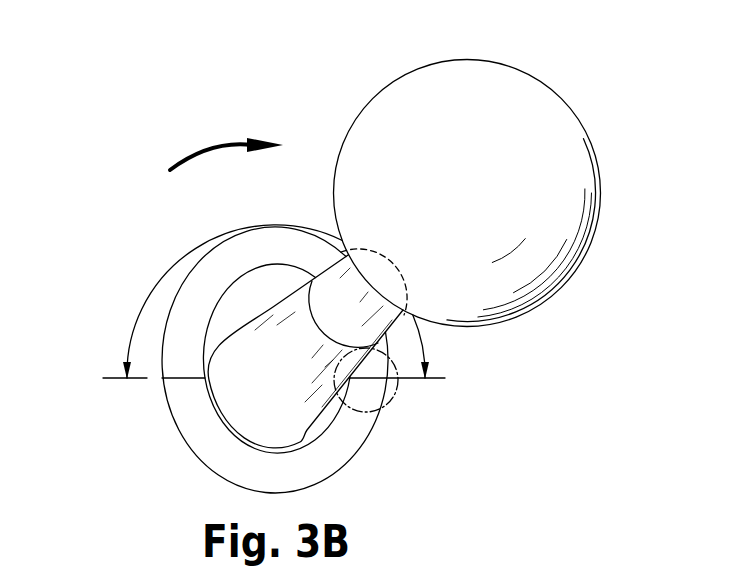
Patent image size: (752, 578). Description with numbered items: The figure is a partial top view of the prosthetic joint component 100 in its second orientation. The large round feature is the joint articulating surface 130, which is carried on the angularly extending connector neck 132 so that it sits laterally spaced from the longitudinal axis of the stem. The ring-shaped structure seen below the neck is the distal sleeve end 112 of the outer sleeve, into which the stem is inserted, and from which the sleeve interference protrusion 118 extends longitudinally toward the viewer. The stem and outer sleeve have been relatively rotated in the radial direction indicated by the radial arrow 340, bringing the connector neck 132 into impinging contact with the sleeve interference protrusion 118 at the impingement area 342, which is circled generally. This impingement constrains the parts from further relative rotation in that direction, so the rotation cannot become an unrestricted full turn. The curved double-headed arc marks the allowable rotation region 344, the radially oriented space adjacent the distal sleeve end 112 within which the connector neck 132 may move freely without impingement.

The prosthetic joint component 100 is at (600, 92).
The distal sleeve end 112 is at (166, 319).
The sleeve interference protrusion 118 is at (210, 448).
The joint articulating surface 130 is at (490, 207).
The connector neck 132 is at (310, 254).
The radial arrow 340 is at (213, 146).
The impingement area 342 is at (397, 394).
The allowable rotation region 344 is at (172, 267).